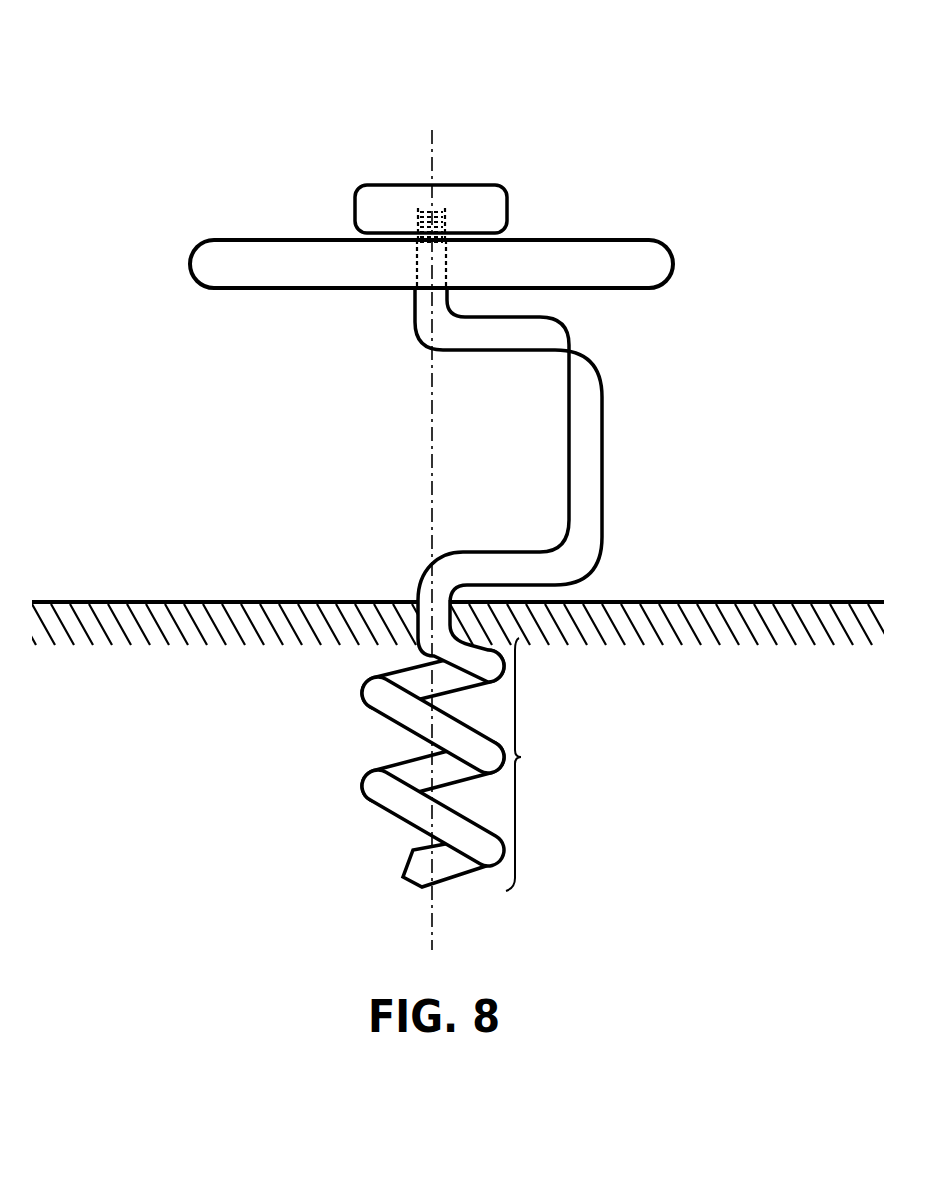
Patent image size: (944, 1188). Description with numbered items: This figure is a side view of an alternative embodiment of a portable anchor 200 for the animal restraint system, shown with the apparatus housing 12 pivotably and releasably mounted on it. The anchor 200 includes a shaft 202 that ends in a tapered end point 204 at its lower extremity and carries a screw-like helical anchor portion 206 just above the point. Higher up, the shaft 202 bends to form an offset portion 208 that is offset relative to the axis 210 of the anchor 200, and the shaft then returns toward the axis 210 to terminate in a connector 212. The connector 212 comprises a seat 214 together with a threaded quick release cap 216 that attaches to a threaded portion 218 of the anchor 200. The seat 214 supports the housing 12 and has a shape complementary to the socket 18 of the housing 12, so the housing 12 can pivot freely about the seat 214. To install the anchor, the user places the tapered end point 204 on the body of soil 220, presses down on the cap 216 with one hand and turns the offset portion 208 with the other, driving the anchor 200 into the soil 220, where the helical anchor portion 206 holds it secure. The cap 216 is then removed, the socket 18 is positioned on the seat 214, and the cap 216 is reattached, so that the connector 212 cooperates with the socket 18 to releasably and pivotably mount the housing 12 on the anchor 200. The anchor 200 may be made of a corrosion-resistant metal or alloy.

The portable anchor 200 is at (468, 480).
The housing 12 is at (663, 268).
The threaded quick release cap 216 is at (499, 206).
The threaded portion 218 is at (443, 213).
The socket 18 is at (413, 264).
The seat 214 is at (447, 290).
The connector 212 is at (400, 298).
The offset portion 208 is at (585, 448).
The shaft 202 is at (495, 589).
The axis 210 is at (430, 468).
The screw-like helical anchor portion 206 is at (445, 745).
The tapered end point 204 is at (408, 868).
The body of soil 220 is at (197, 602).